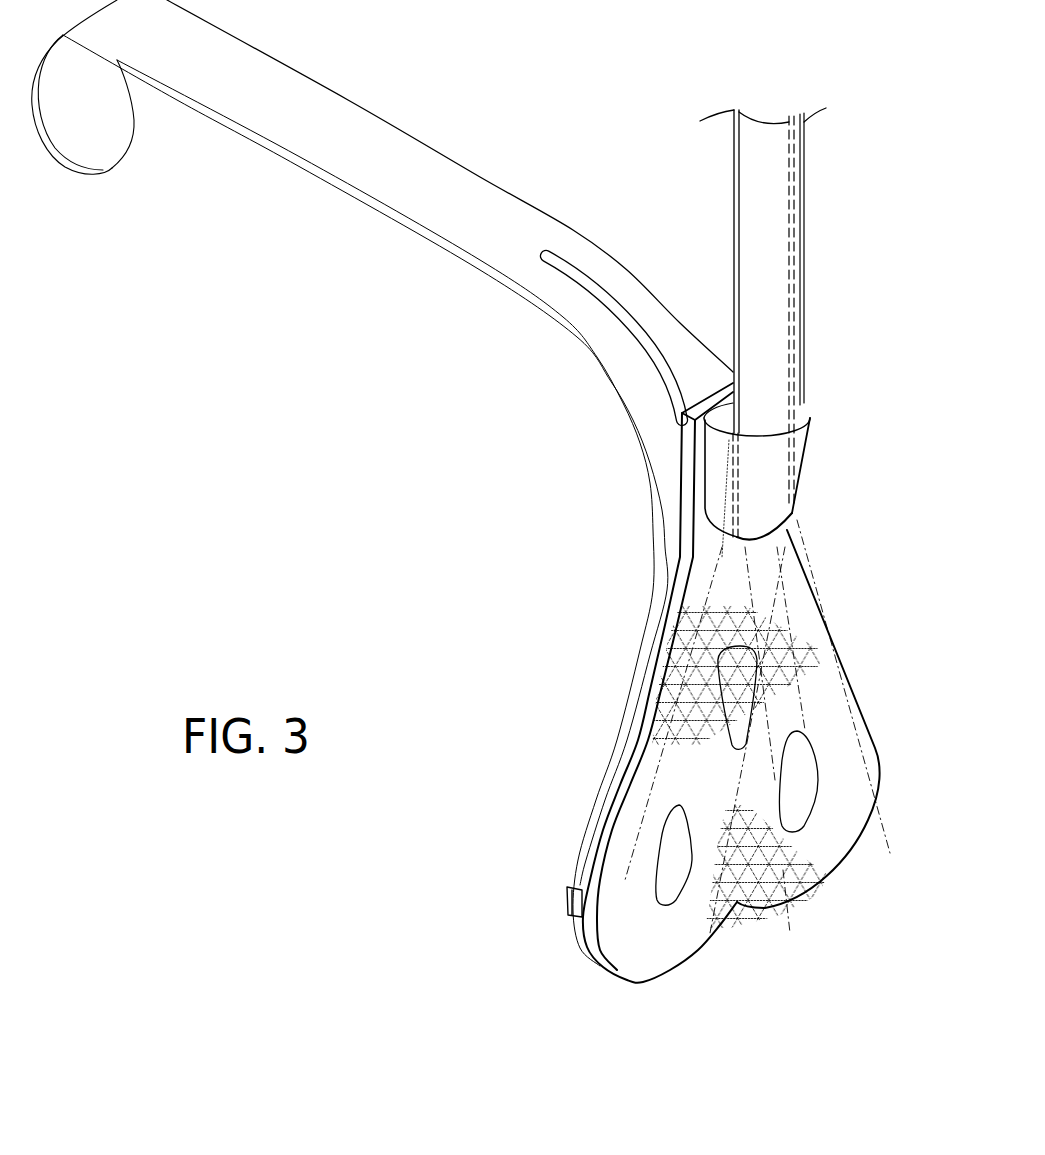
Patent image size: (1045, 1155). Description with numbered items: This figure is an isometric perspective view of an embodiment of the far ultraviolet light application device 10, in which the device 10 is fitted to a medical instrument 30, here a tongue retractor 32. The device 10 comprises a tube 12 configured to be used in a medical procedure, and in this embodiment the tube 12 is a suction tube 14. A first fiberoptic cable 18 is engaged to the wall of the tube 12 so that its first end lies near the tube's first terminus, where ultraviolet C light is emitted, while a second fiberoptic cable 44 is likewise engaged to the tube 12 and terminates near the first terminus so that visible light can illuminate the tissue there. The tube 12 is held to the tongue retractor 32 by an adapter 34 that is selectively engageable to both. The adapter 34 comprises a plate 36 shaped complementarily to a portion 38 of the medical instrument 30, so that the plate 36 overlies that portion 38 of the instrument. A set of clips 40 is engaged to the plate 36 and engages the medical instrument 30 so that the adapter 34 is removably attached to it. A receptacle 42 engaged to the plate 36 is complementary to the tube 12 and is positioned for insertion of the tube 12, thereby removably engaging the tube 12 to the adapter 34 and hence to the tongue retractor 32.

The far ultraviolet light application device 10 is at (557, 142).
The tube 12 is at (803, 324).
The suction tube 14 is at (803, 180).
The first fiberoptic cable 18 is at (795, 237).
The medical instrument 30 is at (313, 170).
The tongue retractor 32 is at (427, 242).
The adapter 34 is at (800, 473).
The plate 36 is at (805, 698).
The portion of the medical instrument 38 is at (793, 717).
The set of clips 40 is at (567, 900).
The receptacle 42 is at (810, 440).
The second fiberoptic cable 44 is at (732, 260).